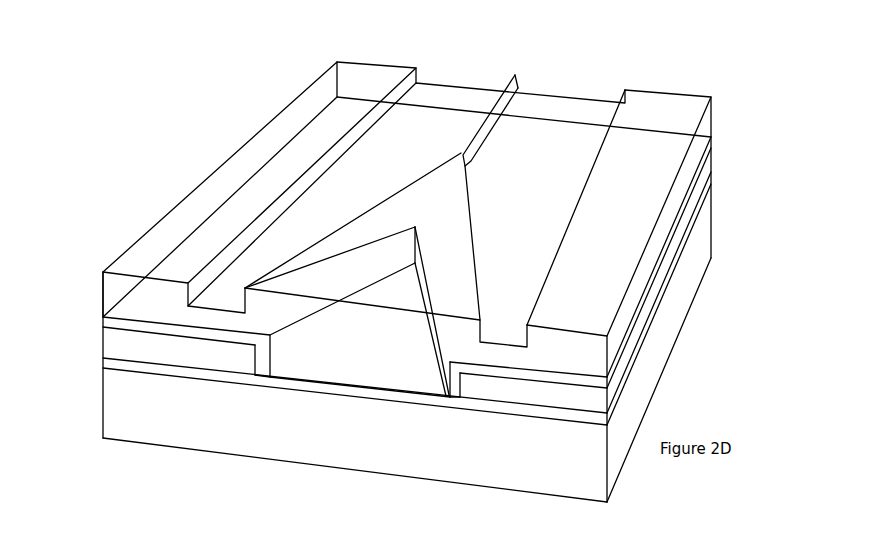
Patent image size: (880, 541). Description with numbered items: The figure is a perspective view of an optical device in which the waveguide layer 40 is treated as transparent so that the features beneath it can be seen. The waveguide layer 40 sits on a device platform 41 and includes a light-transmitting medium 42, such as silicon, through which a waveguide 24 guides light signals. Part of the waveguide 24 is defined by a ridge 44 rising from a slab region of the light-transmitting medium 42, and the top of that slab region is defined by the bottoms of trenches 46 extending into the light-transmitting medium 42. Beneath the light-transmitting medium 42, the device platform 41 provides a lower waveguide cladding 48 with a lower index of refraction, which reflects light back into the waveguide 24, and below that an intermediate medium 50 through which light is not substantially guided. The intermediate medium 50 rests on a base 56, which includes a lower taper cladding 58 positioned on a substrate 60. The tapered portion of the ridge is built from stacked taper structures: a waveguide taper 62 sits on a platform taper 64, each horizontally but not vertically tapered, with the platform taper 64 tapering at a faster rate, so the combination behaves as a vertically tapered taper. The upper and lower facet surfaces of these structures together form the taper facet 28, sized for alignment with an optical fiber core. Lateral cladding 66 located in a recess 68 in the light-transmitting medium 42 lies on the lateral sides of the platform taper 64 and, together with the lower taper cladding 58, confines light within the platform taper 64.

The waveguide 24 is at (518, 74).
The taper facet 28 is at (352, 349).
The waveguide layer 40 is at (80, 268).
The device platform 41 is at (80, 320).
The light-transmitting medium 42 is at (212, 192).
The ridge 44 is at (470, 134).
The trenches 46 is at (576, 95).
The lower waveguide cladding 48 is at (121, 323).
The intermediate medium 50 is at (121, 351).
The base 56 is at (666, 268).
The lower taper cladding 58 is at (440, 402).
The substrate 60 is at (406, 470).
The waveguide taper 62 is at (356, 212).
The platform taper 64 is at (424, 264).
The lateral cladding 66 is at (253, 354).
The recess 68 is at (258, 378).